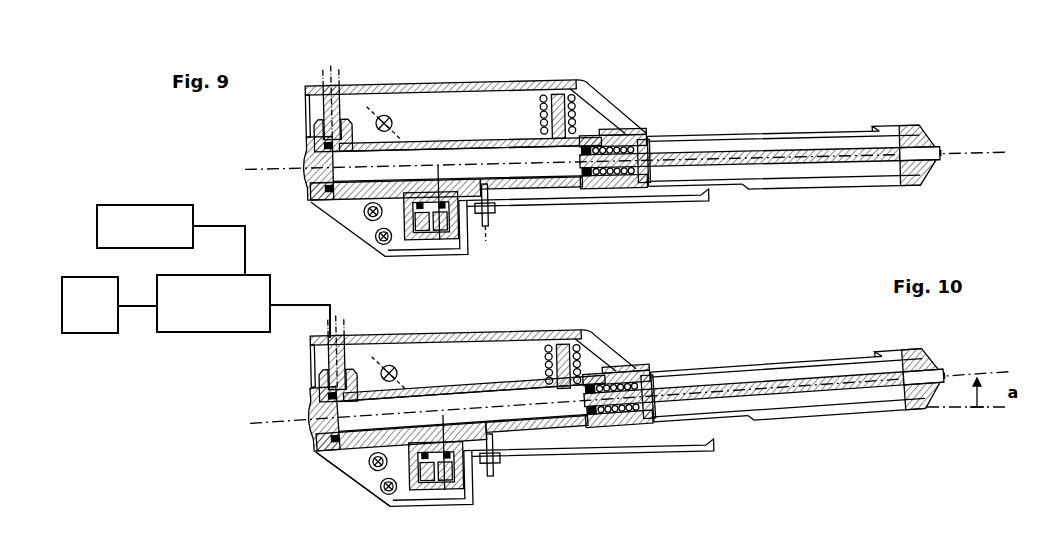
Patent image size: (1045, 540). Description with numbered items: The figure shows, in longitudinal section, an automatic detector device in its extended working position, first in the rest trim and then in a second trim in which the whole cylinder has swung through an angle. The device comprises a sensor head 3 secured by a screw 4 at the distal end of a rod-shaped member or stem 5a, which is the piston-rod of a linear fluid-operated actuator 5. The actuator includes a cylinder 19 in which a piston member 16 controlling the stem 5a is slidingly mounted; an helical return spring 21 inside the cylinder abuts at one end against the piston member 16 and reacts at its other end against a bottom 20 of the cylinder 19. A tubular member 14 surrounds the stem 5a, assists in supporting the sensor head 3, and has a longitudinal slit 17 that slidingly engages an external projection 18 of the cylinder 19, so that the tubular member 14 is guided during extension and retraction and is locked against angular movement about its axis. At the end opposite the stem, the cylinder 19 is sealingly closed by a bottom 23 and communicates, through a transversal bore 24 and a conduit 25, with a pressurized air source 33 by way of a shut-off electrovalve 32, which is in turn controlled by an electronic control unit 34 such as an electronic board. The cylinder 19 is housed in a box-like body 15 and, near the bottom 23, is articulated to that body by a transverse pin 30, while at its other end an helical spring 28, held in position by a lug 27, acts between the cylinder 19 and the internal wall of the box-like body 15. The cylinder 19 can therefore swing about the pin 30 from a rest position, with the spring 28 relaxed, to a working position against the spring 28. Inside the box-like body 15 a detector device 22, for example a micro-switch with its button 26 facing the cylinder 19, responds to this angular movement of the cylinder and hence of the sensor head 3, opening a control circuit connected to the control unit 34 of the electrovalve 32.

In FIG. 9, the sensor head 3 is at (917, 127).
In FIG. 10, the sensor head 3 is at (918, 410).
In FIG. 9, the screw 4 is at (944, 151).
In FIG. 10, the screw 4 is at (948, 375).
In FIG. 9, the linear fluid-operated actuator 5 is at (330, 196).
In FIG. 10, the linear fluid-operated actuator 5 is at (460, 413).
In FIG. 9, the rod-shaped member 5a is at (863, 100).
In FIG. 10, the rod-shaped member 5a is at (823, 388).
In FIG. 9, the tubular member 14 is at (806, 194).
In FIG. 10, the tubular member 14 is at (757, 421).
In FIG. 9, the box-like body 15 is at (395, 86).
In FIG. 10, the box-like body 15 is at (446, 361).
In FIG. 9, the piston member 16 is at (598, 182).
In FIG. 10, the piston member 16 is at (608, 412).
In FIG. 9, the longitudinal slit 17 is at (720, 130).
In FIG. 10, the longitudinal slit 17 is at (758, 365).
In FIG. 9, the external projection 18 is at (606, 130).
In FIG. 10, the external projection 18 is at (633, 372).
In FIG. 9, the cylinder 19 is at (520, 176).
In FIG. 10, the cylinder 19 is at (575, 428).
In FIG. 9, the bottom of cylinder 20 is at (650, 183).
In FIG. 10, the bottom of cylinder 20 is at (672, 428).
In FIG. 9, the helical return spring 21 is at (616, 184).
In FIG. 10, the helical return spring 21 is at (640, 415).
In FIG. 9, the detector device 22 is at (440, 243).
In FIG. 10, the detector device 22 is at (478, 487).
In FIG. 9, the bottom 23 is at (308, 158).
In FIG. 10, the bottom 23 is at (312, 412).
In FIG. 9, the transversal bore 24 is at (312, 131).
In FIG. 10, the transversal bore 24 is at (338, 385).
In FIG. 9, the conduit 25 is at (323, 86).
In FIG. 10, the conduit 25 is at (318, 352).
In FIG. 10, the button 26 is at (520, 445).
In FIG. 9, the lug 27 is at (530, 80).
In FIG. 10, the lug 27 is at (556, 332).
In FIG. 9, the helical spring 28 is at (558, 78).
In FIG. 10, the helical spring 28 is at (594, 343).
In FIG. 9, the pin 30 is at (372, 218).
In FIG. 10, the pin 30 is at (372, 468).
In FIG. 10, the shut-off electrovalve 32 is at (200, 324).
In FIG. 10, the pressurized fluid source 33 is at (92, 322).
In FIG. 10, the electronic control unit 34 is at (137, 208).